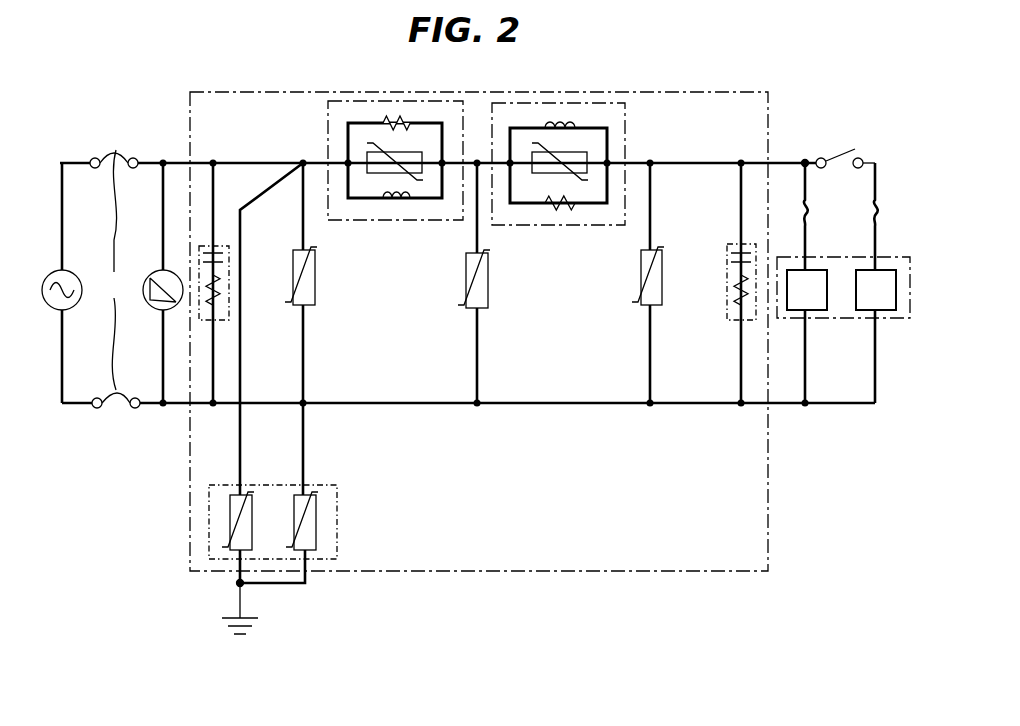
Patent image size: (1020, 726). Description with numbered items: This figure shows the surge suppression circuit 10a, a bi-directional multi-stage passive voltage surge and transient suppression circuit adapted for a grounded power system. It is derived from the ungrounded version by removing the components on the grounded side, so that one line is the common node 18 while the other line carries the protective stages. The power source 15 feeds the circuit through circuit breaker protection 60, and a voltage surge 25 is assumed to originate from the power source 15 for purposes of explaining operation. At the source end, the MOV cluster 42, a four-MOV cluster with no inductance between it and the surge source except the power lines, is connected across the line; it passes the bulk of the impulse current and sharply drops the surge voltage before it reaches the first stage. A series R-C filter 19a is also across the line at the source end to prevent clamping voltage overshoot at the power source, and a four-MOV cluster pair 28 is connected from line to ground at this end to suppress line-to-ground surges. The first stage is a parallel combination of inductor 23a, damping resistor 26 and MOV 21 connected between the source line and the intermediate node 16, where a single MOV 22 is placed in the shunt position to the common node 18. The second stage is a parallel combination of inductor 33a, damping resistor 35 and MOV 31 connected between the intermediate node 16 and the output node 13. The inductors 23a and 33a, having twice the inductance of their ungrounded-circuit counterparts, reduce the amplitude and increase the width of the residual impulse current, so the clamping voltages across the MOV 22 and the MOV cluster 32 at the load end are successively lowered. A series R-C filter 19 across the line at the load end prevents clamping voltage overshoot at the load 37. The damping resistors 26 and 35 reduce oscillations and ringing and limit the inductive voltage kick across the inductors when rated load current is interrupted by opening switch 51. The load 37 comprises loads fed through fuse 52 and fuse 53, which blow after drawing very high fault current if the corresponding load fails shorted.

The surge suppression circuit 10a is at (523, 571).
The output node 13 is at (806, 160).
The power source 15 is at (66, 272).
The intermediate node 16 is at (477, 160).
The common node 18 is at (165, 408).
The series R-C filter 19 is at (735, 247).
The series R-C filter 19a is at (230, 262).
The MOV 21 is at (380, 163).
The MOV 22 is at (466, 283).
The inductor 23a is at (410, 121).
The voltage surge 25 is at (158, 272).
The damping resistor 26 is at (418, 202).
The four-MOV cluster pair 28 is at (337, 522).
The MOV 31 is at (578, 163).
The MOV cluster 32 is at (640, 283).
The inductor 33a is at (575, 122).
The damping resistor 35 is at (576, 204).
The load 37 is at (897, 320).
The MOV cluster 42 is at (313, 329).
The switch 51 is at (846, 155).
The fuse 52 is at (812, 211).
The fuse 53 is at (879, 211).
The circuit breaker protection 60 is at (116, 270).